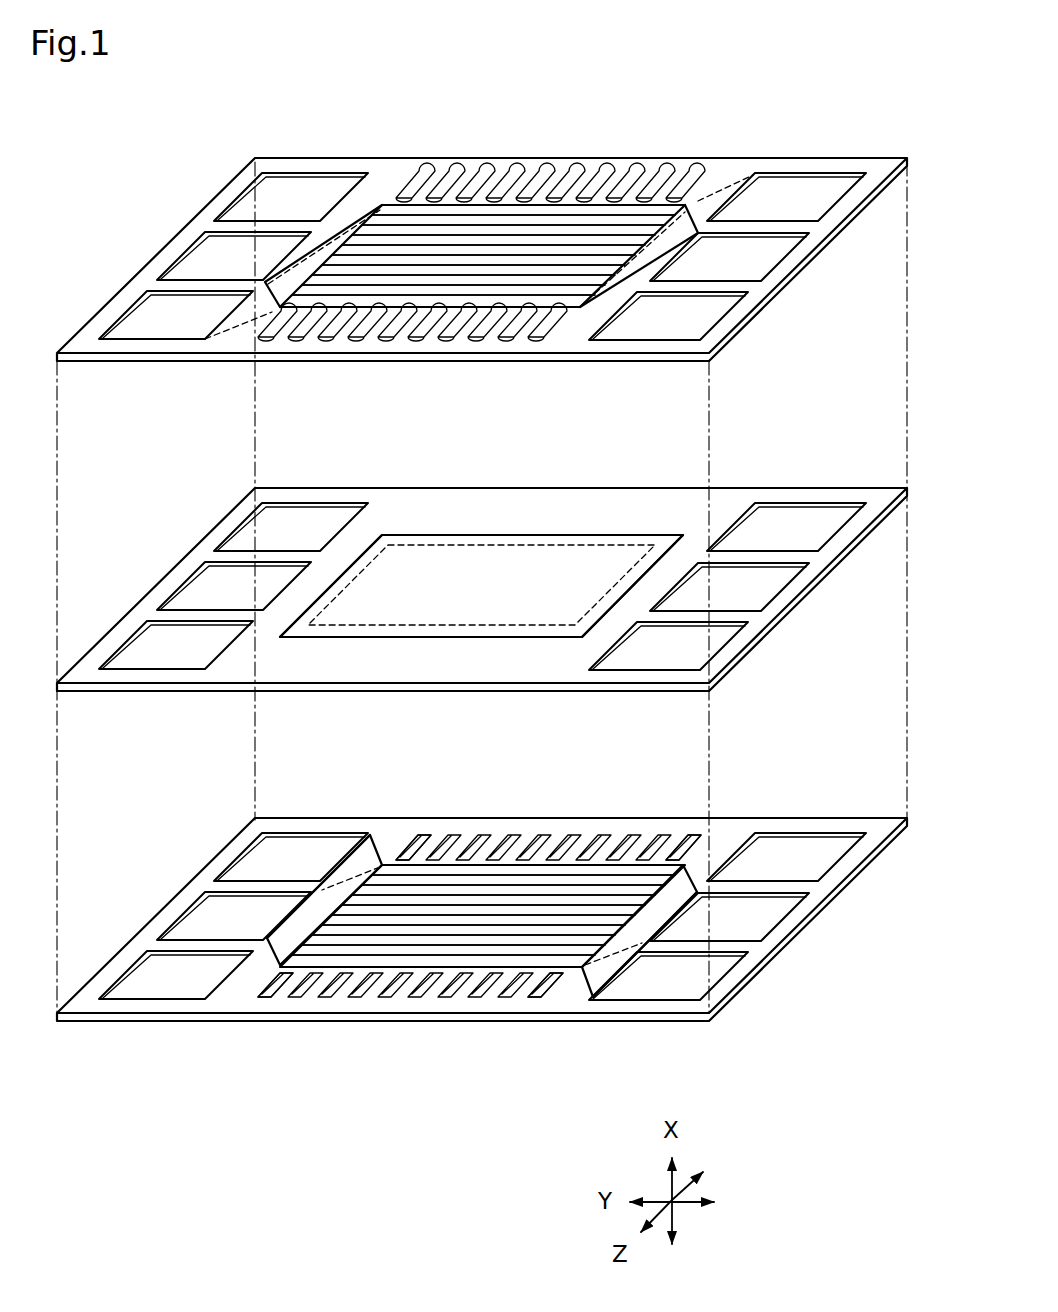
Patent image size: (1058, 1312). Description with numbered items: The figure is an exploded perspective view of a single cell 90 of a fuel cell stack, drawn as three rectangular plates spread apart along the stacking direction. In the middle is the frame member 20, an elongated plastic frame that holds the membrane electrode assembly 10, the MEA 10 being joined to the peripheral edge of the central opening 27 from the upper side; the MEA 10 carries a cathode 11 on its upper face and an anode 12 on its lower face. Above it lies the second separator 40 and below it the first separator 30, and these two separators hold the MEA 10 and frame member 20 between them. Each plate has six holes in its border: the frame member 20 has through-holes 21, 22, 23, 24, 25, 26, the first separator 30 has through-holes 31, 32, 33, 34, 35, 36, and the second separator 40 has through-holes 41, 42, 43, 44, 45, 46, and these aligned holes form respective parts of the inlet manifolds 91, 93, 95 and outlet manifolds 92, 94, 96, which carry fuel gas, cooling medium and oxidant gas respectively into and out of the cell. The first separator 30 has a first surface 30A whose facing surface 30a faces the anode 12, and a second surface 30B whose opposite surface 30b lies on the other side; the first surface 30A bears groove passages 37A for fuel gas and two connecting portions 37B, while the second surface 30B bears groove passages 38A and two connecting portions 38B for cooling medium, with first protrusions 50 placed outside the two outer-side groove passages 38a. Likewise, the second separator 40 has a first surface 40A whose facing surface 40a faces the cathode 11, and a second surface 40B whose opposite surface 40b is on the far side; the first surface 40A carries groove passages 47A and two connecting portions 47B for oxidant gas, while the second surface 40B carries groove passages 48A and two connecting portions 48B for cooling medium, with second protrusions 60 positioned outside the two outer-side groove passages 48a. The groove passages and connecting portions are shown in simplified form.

The membrane electrode assembly 10 is at (618, 520).
The cathode 11 is at (488, 573).
The anode 12 is at (477, 600).
The frame member 20 is at (742, 482).
The through-hole 21 is at (273, 536).
The through-hole 22 is at (734, 634).
The through-hole 23 is at (789, 577).
The through-hole 24 is at (180, 594).
The through-hole 25 is at (822, 530).
The through-hole 26 is at (122, 654).
The opening 27 is at (378, 555).
The first separator 30 is at (742, 812).
The first surface 30A is at (540, 940).
The second surface 30B is at (460, 960).
The facing surface 30a is at (495, 910).
The opposite surface 30b is at (490, 925).
The through-hole 31 is at (273, 856).
The through-hole 32 is at (735, 964).
The through-hole 33 is at (789, 909).
The through-hole 34 is at (180, 924).
The through-hole 35 is at (822, 862).
The through-hole 36 is at (122, 984).
The groove passages 37A is at (585, 885).
The connecting portions 37B is at (382, 855).
The groove passages 38A is at (437, 925).
The connecting portions 38B is at (697, 885).
The outer-side groove passages 38a is at (547, 985).
The second separator 40 is at (482, 222).
The first surface 40A is at (452, 262).
The second surface 40B is at (592, 168).
The facing surface 40a is at (498, 255).
The opposite surface 40b is at (493, 250).
The through-hole 41 is at (291, 165).
The through-hole 42 is at (699, 338).
The through-hole 43 is at (757, 280).
The through-hole 44 is at (222, 223).
The through-hole 45 is at (810, 163).
The through-hole 46 is at (164, 281).
The groove passages 47A is at (425, 318).
The connecting portions 47B is at (600, 296).
The groove passages 48A is at (585, 218).
The connecting portions 48B is at (354, 208).
The outer-side groove passages 48a is at (583, 300).
The first protrusions 50 is at (478, 835).
The second protrusions 60 is at (482, 175).
The single cell 90 is at (740, 152).
The inlet manifold 91 is at (226, 210).
The outlet manifold 92 is at (733, 300).
The inlet manifold 93 is at (786, 246).
The outlet manifold 94 is at (178, 268).
The inlet manifold 95 is at (822, 195).
The outlet manifold 96 is at (122, 325).